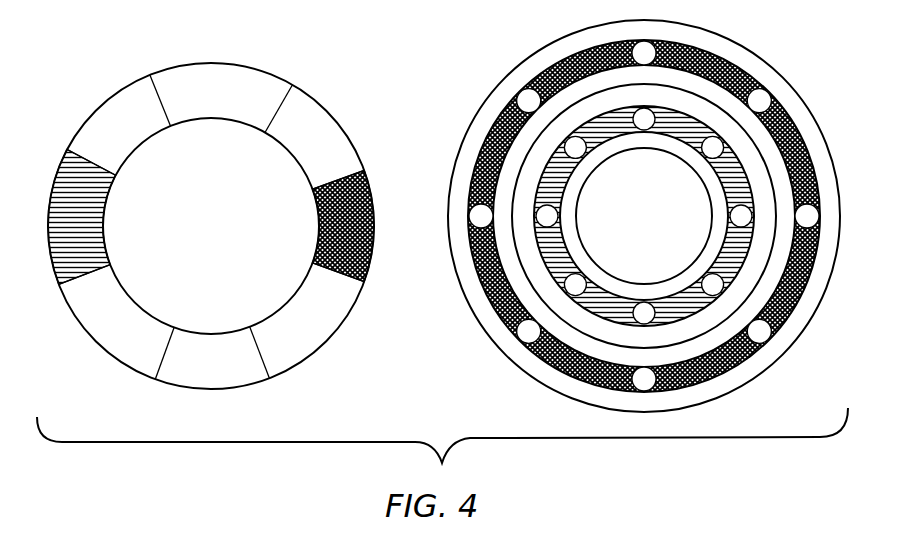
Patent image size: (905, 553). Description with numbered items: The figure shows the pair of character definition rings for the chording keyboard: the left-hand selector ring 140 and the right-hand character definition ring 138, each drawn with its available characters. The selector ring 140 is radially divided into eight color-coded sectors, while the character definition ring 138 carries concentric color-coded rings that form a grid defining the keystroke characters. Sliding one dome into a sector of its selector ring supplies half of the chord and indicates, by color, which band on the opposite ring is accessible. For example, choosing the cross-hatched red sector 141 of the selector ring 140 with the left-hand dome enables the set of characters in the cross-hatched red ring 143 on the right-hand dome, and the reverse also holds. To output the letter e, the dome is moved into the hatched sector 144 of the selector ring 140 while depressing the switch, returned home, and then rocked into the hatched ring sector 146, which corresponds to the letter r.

The character definition ring 140 is at (168, 68).
The hatched sector 144 is at (80, 247).
The red sector 141 is at (357, 262).
The character definition ring 138 is at (510, 73).
The red ring 143 is at (498, 132).
The hatched ring sector 146 is at (735, 247).